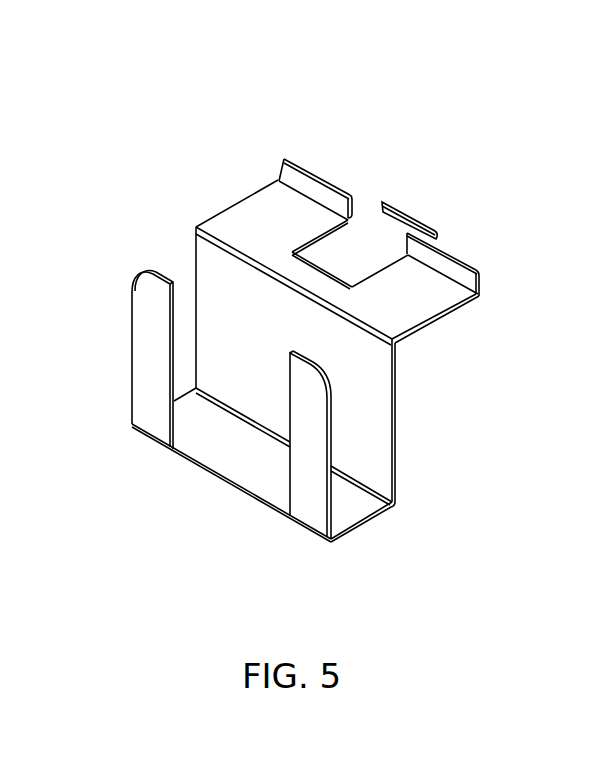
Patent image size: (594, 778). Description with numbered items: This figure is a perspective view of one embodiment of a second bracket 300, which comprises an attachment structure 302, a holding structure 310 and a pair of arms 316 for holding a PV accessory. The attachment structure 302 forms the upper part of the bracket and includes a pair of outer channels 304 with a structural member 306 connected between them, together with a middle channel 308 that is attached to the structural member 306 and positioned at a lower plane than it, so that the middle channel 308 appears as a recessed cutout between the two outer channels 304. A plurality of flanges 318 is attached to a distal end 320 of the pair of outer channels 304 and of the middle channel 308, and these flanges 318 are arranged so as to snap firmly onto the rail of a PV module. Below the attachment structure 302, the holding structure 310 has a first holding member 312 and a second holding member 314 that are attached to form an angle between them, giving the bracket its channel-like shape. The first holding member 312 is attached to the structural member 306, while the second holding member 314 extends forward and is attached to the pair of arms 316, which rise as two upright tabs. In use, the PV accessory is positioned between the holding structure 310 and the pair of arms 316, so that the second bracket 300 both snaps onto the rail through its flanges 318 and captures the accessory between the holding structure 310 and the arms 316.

The second bracket 300 is at (457, 112).
The attachment structure 302 is at (212, 213).
The outer channels 304 is at (422, 302).
The structural member 306 is at (323, 283).
The middle channel 308 is at (395, 234).
The holding structure 310 is at (400, 464).
The first holding member 312 is at (370, 380).
The second holding member 314 is at (342, 500).
The arms 316 is at (302, 486).
The flanges 318 is at (378, 212).
The distal end 320 is at (277, 181).